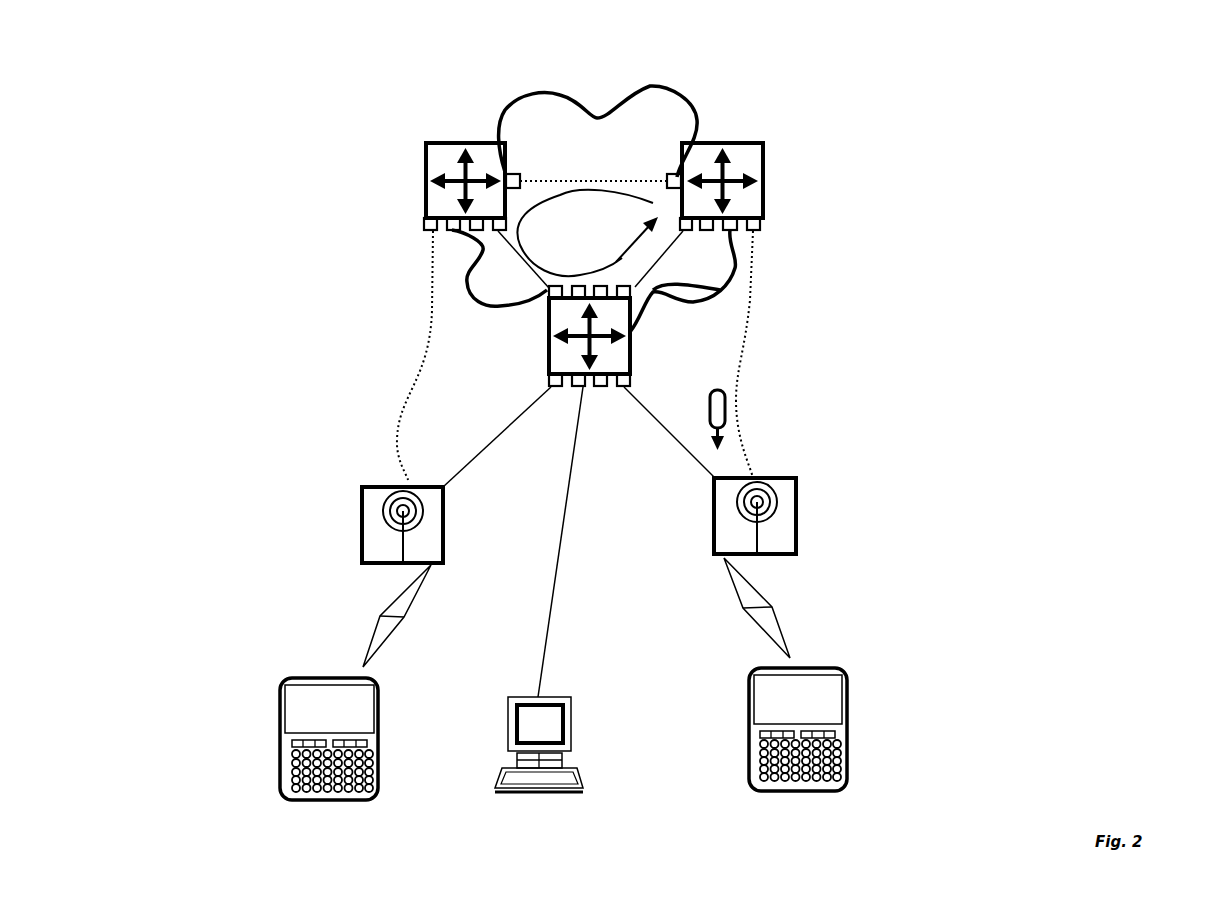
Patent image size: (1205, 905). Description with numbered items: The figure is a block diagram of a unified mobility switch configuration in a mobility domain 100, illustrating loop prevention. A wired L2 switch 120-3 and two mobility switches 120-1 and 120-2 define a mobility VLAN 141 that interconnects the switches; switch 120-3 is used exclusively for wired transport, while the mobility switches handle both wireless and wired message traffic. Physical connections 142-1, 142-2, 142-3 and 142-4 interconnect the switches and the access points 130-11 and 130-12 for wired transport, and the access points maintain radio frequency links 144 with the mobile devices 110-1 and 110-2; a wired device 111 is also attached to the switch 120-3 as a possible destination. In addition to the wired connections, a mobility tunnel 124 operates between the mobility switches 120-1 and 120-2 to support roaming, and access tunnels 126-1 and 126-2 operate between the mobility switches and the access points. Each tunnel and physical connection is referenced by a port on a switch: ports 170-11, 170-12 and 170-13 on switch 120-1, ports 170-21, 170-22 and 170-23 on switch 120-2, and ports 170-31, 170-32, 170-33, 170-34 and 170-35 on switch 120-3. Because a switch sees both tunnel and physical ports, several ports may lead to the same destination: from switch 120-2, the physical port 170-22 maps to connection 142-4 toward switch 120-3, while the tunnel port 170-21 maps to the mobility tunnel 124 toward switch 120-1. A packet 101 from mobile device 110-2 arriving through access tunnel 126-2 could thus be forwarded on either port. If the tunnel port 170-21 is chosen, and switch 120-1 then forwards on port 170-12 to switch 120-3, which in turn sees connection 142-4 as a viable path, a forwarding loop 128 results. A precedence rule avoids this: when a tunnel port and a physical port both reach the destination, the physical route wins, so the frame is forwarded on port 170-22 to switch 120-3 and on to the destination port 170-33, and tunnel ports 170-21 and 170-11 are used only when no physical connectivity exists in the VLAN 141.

The mobility domain 100 is at (950, 116).
The packet 101 is at (708, 403).
The mobile device 110-1 is at (280, 740).
The mobile device 110-2 is at (749, 758).
The wired device 111 is at (571, 708).
The mobility switch 120-1 is at (426, 167).
The mobility switch 120-2 is at (763, 162).
The wired L2 switch 120-3 is at (549, 340).
The mobility tunnel 124 is at (616, 181).
The access tunnel 126-1 is at (395, 422).
The access tunnel 126-2 is at (735, 397).
The loop path 128 is at (553, 267).
The access point 130-11 is at (362, 543).
The access point 130-12 is at (796, 513).
The mobility VLAN 141 is at (598, 117).
The physical connection 142-1 is at (493, 438).
The physical connection 142-2 is at (692, 455).
The physical connection 142-3 is at (533, 265).
The physical connection 142-4 is at (637, 278).
The radio frequency link 144 is at (373, 640).
The tunnel port 170-11 is at (513, 172).
The physical port 170-12 is at (467, 265).
The port 170-13 is at (424, 222).
The tunnel port 170-21 is at (677, 172).
The physical port 170-22 is at (677, 215).
The port 170-23 is at (762, 222).
The port 170-31 is at (545, 385).
The port 170-32 is at (547, 292).
The destination port 170-33 is at (637, 285).
The port 170-34 is at (637, 383).
The port 170-35 is at (598, 388).